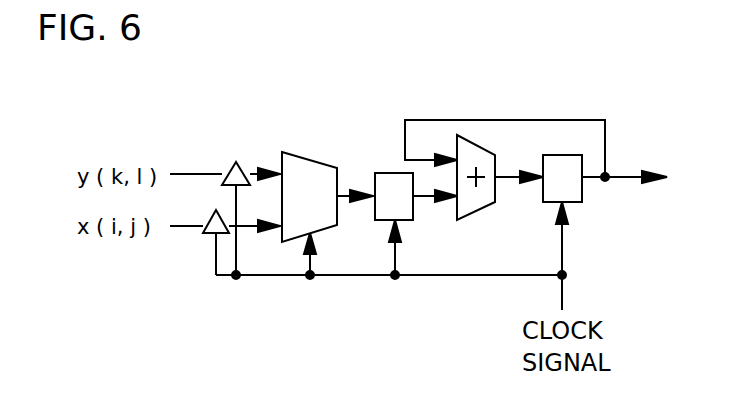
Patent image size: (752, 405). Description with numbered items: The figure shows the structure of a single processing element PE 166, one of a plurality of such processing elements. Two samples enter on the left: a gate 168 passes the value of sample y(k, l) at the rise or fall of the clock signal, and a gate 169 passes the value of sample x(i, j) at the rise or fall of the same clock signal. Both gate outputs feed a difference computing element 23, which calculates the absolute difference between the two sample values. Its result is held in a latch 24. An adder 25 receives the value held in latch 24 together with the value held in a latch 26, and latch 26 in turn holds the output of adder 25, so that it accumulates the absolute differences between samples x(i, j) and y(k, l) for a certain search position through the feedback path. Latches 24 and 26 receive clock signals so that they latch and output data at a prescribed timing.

The processing element 166 is at (576, 58).
The gate 168 is at (233, 162).
The gate 169 is at (208, 235).
The difference computing element 23 is at (330, 228).
The latch 24 is at (413, 222).
The adder 25 is at (484, 147).
The latch 26 is at (582, 193).